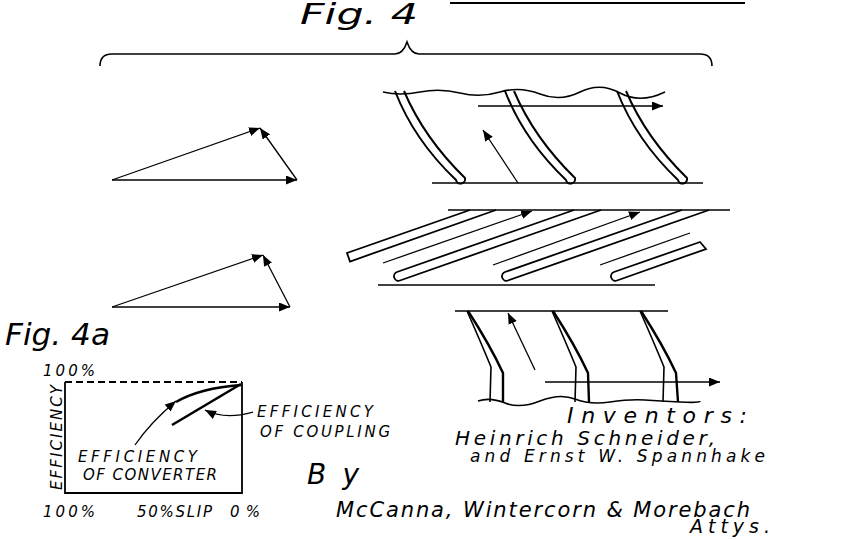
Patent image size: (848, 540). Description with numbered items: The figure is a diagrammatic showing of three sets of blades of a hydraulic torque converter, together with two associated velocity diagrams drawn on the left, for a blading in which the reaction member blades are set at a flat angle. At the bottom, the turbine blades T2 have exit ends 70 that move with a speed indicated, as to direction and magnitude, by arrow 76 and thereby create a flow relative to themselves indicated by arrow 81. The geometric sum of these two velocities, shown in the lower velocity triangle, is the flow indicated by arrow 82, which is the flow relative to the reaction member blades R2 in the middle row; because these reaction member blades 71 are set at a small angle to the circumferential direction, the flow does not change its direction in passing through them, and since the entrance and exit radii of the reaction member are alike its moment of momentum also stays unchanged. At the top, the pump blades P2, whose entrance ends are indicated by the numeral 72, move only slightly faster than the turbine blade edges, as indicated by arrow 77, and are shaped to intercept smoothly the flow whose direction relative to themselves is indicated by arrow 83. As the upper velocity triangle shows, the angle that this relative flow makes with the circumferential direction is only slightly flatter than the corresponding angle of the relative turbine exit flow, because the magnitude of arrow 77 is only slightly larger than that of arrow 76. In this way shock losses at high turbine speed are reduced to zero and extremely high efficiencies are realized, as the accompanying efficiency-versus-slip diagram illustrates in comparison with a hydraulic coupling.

The exit ends of the turbine blades 70 is at (468, 332).
The reaction member blades 71 is at (382, 241).
The entrance ends of the pump blades 72 is at (682, 166).
The arrow indicating turbine blade speed 76 is at (198, 309).
The arrow indicating pump blade speed 77 is at (207, 182).
The arrow indicating relative turbine exit flow 81 is at (282, 277).
The arrow indicating flow relative to the reaction member blades 82 is at (216, 268).
The arrow indicating relative flow direction to the pump blades 83 is at (277, 150).
The pump blades P2 is at (552, 135).
The reaction member blades R2 is at (547, 247).
The turbine blades T2 is at (580, 358).